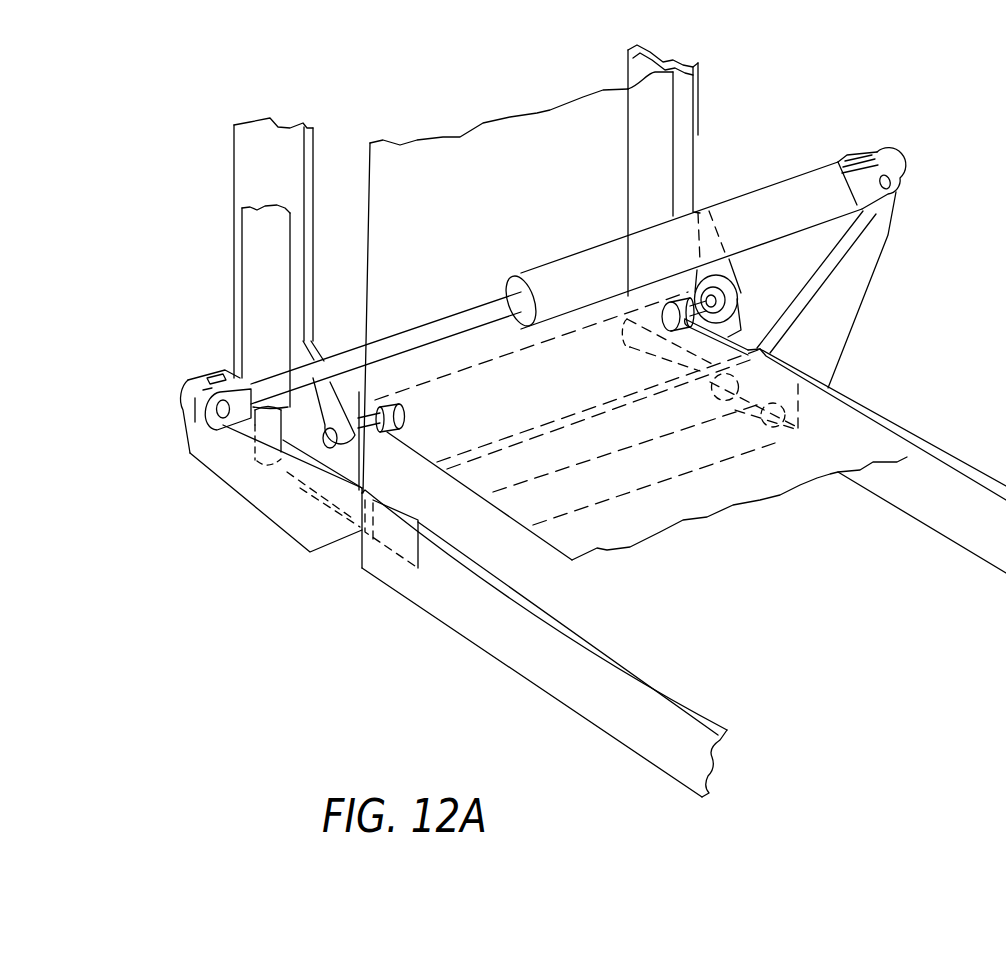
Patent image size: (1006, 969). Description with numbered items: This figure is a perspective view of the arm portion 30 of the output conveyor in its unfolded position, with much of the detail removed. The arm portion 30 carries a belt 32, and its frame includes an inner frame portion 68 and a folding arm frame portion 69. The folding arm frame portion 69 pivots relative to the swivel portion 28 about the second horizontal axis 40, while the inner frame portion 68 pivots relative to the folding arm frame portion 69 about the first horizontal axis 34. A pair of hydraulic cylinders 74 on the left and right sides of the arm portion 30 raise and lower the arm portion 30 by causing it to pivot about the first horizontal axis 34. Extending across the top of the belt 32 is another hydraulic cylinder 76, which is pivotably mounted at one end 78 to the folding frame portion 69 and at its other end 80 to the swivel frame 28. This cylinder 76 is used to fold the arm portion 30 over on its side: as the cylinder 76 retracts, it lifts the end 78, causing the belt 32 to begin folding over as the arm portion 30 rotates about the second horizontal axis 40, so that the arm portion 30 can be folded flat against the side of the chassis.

The swivel portion 28 is at (833, 390).
The arm portion 30 is at (716, 65).
The belt 32 is at (472, 217).
The first horizontal axis 34 is at (358, 370).
The second horizontal axis 40 is at (867, 418).
The inner frame portion 68 is at (240, 184).
The folding arm frame portion 69 is at (263, 510).
The hydraulic cylinders 74 is at (250, 267).
The hydraulic cylinder 76 is at (780, 187).
The end of cylinder 78 is at (186, 392).
The other end of cylinder 80 is at (897, 185).